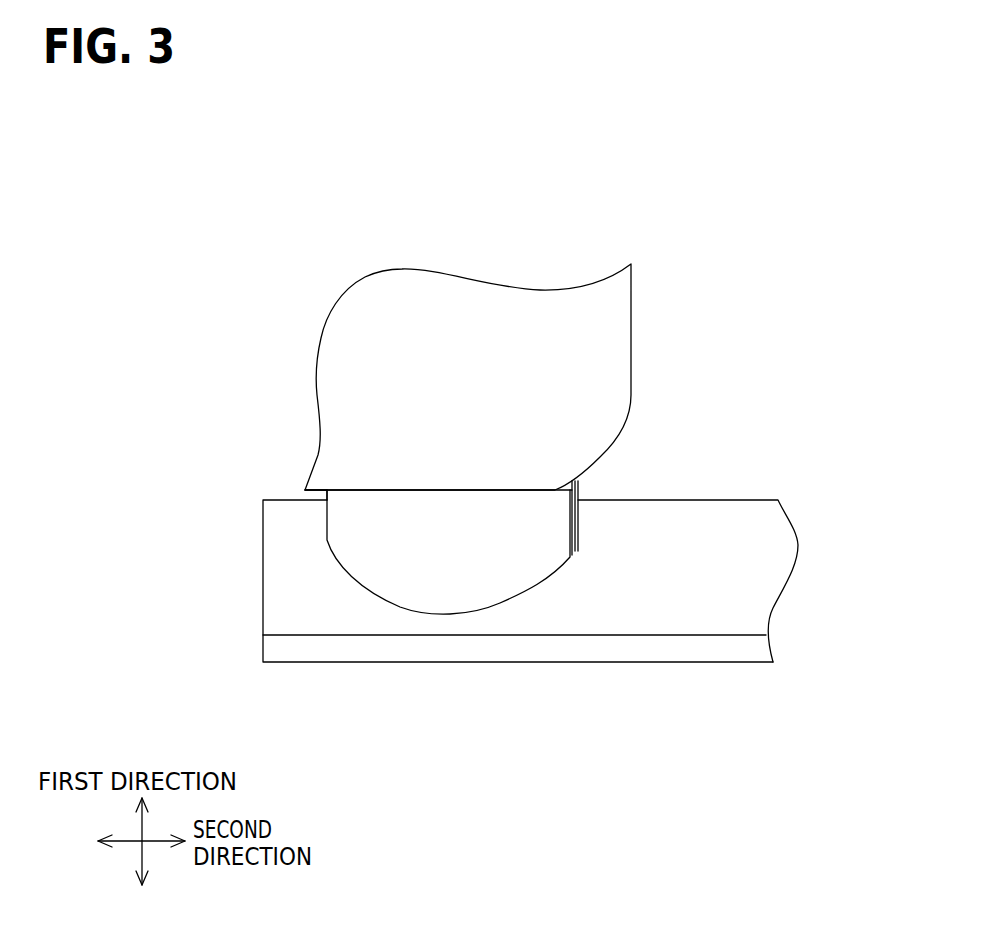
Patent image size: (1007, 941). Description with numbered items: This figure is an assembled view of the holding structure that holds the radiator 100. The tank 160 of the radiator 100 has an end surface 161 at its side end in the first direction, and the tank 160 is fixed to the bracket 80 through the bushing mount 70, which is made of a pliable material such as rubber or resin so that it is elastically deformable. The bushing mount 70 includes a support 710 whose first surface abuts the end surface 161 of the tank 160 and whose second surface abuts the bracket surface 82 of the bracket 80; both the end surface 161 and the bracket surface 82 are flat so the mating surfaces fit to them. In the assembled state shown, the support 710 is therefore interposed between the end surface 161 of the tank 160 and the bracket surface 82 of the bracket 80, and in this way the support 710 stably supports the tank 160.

The radiator 100 is at (643, 303).
The tank 160 is at (595, 402).
The end surface 161 is at (320, 507).
The support 710 is at (556, 527).
The bushing mount 70 is at (327, 532).
The bracket 80 is at (593, 662).
The bracket surface 82 is at (337, 612).